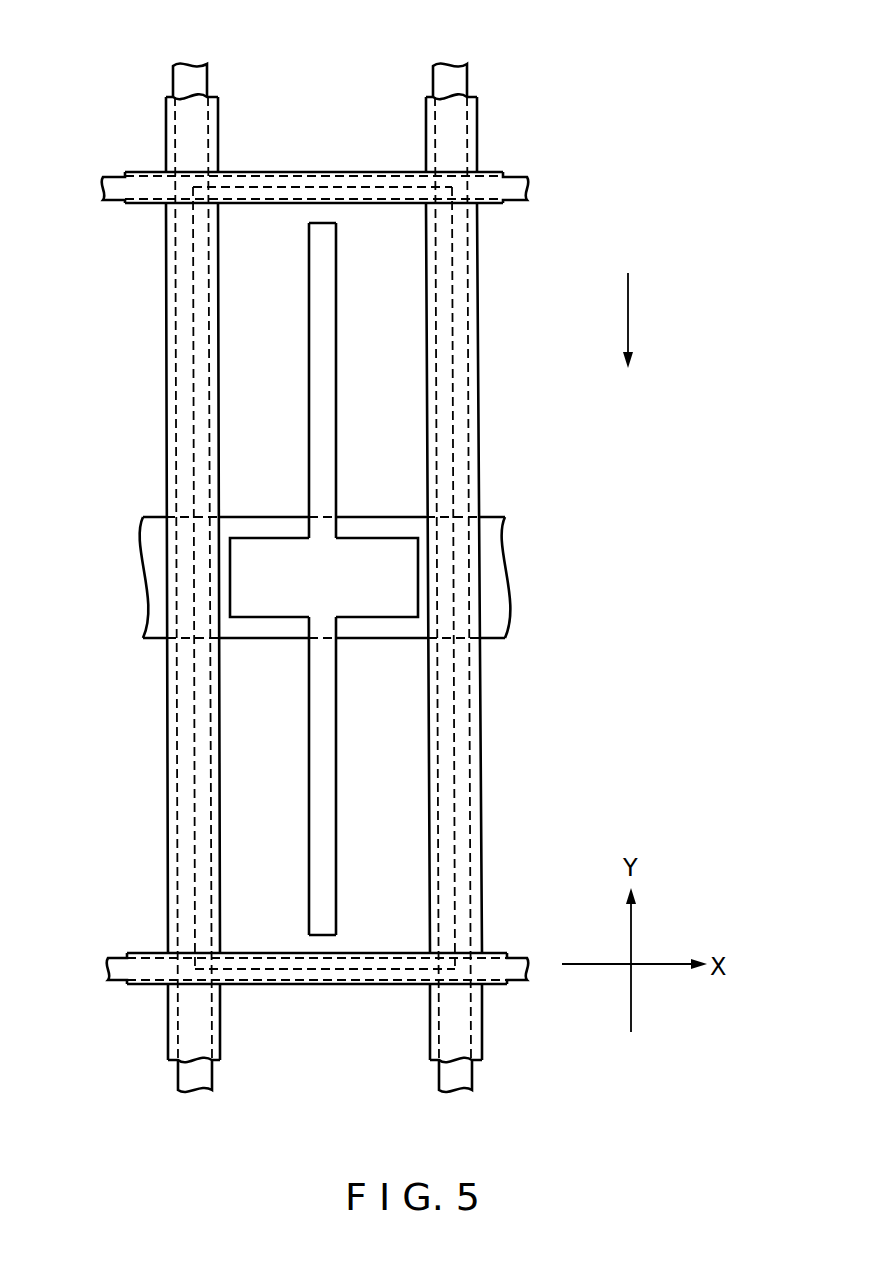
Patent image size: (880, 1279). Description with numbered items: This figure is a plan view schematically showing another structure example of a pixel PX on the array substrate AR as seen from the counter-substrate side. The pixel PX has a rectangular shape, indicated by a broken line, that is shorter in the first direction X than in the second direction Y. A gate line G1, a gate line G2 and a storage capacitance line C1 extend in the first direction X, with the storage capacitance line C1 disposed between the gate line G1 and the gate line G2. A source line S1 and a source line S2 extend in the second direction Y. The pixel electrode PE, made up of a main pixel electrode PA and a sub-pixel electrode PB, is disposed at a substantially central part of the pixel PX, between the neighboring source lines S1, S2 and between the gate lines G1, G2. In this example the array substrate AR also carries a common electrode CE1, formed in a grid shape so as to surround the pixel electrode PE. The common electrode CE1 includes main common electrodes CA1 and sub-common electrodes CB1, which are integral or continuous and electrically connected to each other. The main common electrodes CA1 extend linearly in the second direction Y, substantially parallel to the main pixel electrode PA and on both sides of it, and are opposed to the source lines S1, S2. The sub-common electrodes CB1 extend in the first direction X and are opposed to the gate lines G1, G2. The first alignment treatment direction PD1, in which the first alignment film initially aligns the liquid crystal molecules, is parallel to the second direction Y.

The source line S1 is at (190, 75).
The source line S2 is at (447, 75).
The gate line G1 is at (103, 190).
The gate line G2 is at (108, 966).
The sub-common electrode CB1 is at (323, 170).
The common electrode CE1 is at (232, 1052).
The main common electrode CA1 is at (166, 865).
The storage capacitance line C1 is at (145, 585).
The pixel electrode PE is at (386, 579).
The main pixel electrode PA is at (330, 355).
The sub-pixel electrode PB is at (347, 548).
The pixel PX is at (458, 182).
The array substrate AR is at (530, 101).
The first alignment treatment direction PD1 is at (630, 305).